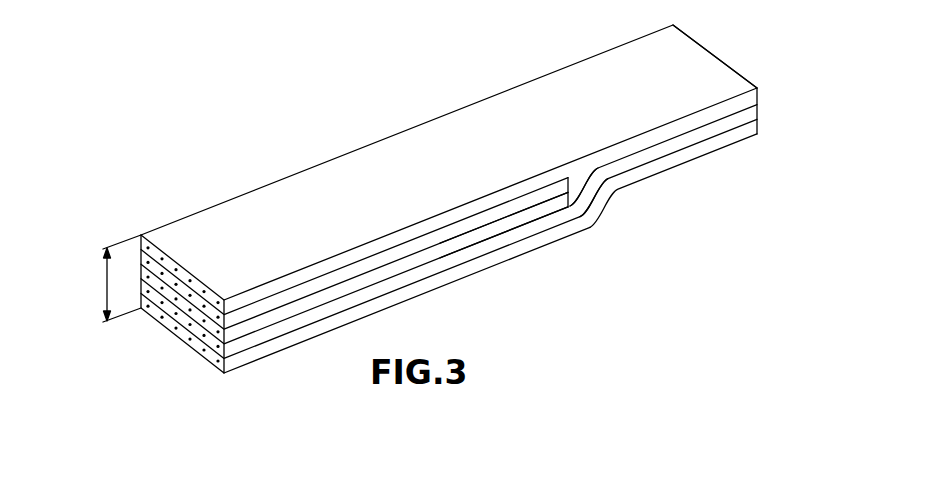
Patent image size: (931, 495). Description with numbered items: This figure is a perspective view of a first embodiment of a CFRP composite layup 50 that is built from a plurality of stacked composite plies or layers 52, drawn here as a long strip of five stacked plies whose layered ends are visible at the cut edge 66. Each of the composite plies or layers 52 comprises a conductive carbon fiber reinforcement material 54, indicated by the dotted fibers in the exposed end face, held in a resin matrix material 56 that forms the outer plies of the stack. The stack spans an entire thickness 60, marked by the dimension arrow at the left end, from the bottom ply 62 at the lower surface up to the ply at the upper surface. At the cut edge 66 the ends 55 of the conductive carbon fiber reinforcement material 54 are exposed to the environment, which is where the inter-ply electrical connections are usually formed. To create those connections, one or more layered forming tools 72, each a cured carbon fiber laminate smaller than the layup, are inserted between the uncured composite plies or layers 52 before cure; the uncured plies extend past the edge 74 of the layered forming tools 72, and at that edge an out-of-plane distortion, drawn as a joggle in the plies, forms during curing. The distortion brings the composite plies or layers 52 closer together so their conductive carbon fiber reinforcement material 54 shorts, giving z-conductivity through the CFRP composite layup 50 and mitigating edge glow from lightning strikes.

The CFRP composite layup 50 is at (431, 200).
The composite plies or layers 52 is at (758, 98).
The conductive carbon fiber reinforcement material 54 is at (162, 287).
The ends of the conductive carbon fiber reinforcement material 55 is at (731, 68).
The resin matrix material 56 is at (253, 234).
The entire thickness 60 is at (103, 284).
The bottom ply 62 is at (605, 195).
The cut edge 66 is at (707, 54).
The layered forming tools 72 is at (513, 221).
The edge of the layered forming tools 74 is at (586, 186).